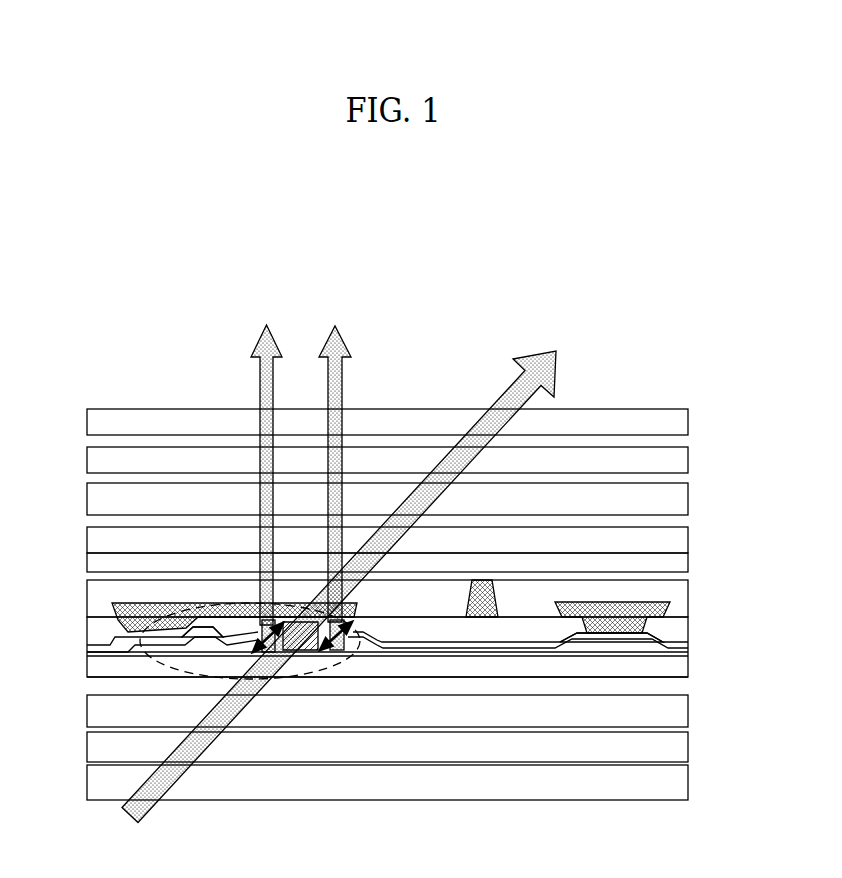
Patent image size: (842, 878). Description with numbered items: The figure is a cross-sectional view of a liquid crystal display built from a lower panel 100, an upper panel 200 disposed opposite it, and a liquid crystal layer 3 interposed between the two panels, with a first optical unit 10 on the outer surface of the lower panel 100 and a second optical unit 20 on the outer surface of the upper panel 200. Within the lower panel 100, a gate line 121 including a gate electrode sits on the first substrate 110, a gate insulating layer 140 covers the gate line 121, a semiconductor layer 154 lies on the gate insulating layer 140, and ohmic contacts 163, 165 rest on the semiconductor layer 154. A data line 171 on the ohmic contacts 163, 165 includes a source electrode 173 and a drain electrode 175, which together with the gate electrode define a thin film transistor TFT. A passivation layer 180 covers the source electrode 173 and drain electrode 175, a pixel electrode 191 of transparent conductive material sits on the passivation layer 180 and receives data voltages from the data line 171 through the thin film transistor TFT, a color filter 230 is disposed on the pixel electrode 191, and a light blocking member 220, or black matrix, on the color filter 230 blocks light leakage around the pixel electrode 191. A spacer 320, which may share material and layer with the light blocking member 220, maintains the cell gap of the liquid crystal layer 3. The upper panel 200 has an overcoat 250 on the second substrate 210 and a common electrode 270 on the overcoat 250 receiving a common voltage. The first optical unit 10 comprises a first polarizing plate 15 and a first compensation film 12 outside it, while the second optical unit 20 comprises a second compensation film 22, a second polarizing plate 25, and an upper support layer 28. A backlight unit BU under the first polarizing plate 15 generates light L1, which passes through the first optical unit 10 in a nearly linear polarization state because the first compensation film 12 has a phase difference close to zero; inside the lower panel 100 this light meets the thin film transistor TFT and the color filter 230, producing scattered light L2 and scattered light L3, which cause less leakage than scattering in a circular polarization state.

The second optical unit 20 is at (425, 461).
The upper support layer 28 is at (678, 424).
The second polarizing plate 25 is at (678, 462).
The second compensation film 22 is at (407, 499).
The upper panel 200 is at (413, 462).
The second substrate 210 is at (113, 537).
The overcoat 250 is at (203, 562).
The light blocking member 220 is at (162, 613).
The liquid crystal layer 3 is at (403, 492).
The spacer 320 is at (497, 598).
The common electrode 270 is at (653, 573).
The lower panel 100 is at (382, 586).
The first substrate 110 is at (98, 667).
The gate insulating layer 140 is at (122, 654).
The ohmic contact 163 is at (160, 655).
The source electrode 173 is at (160, 612).
The color filter 230 is at (96, 631).
The pixel electrode 191 is at (410, 649).
The passivation layer 180 is at (507, 648).
The data line 171 is at (622, 647).
The gate line 121 is at (228, 653).
The semiconductor layer 154 is at (262, 655).
The ohmic contact 165 is at (307, 655).
The drain electrode 175 is at (350, 621).
The thin film transistor TFT is at (205, 696).
The first optical unit 10 is at (423, 728).
The first polarizing plate 15 is at (678, 714).
The first compensation film 12 is at (406, 747).
The backlight unit BU is at (565, 783).
The light L1 is at (515, 385).
The scattered light L2 is at (253, 345).
The scattered light L3 is at (343, 375).